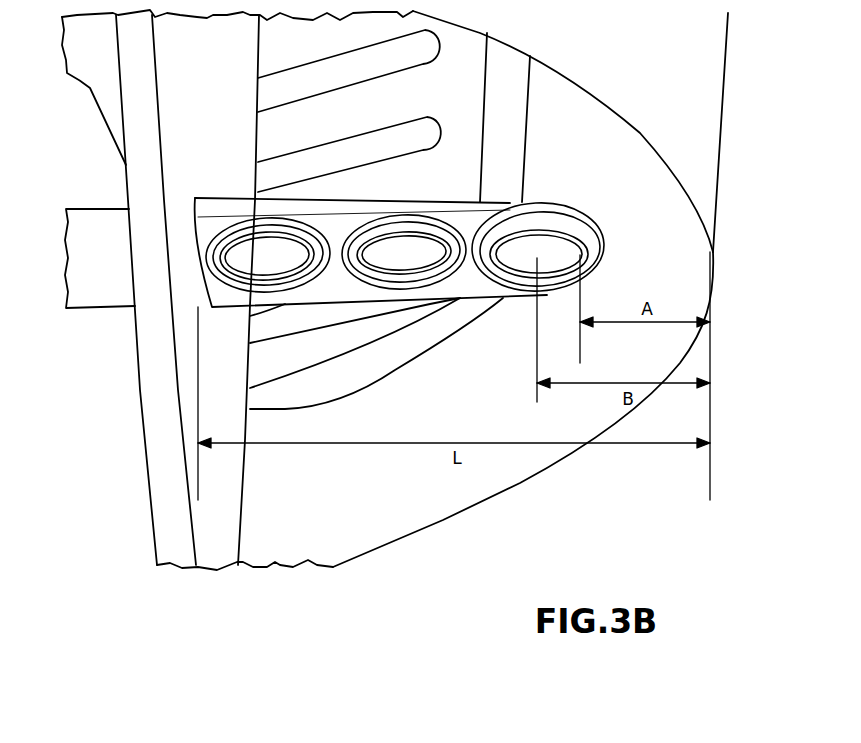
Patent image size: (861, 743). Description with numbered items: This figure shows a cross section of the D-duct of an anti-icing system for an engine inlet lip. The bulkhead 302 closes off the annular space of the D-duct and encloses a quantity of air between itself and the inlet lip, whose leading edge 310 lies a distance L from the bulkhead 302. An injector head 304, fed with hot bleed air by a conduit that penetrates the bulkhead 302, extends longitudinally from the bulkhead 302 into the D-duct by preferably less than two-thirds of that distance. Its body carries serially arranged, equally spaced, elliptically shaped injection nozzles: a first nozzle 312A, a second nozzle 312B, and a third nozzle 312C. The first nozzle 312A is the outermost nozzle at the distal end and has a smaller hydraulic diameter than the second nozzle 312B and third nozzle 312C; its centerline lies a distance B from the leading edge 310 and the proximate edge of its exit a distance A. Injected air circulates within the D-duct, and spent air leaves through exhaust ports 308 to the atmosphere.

The bulkhead 302 is at (205, 146).
The injector head 304 is at (384, 200).
The exhaust ports 308 is at (408, 118).
The leading edge 310 is at (713, 250).
The first nozzle 312A is at (557, 215).
The second nozzle 312B is at (423, 227).
The third nozzle 312C is at (292, 228).